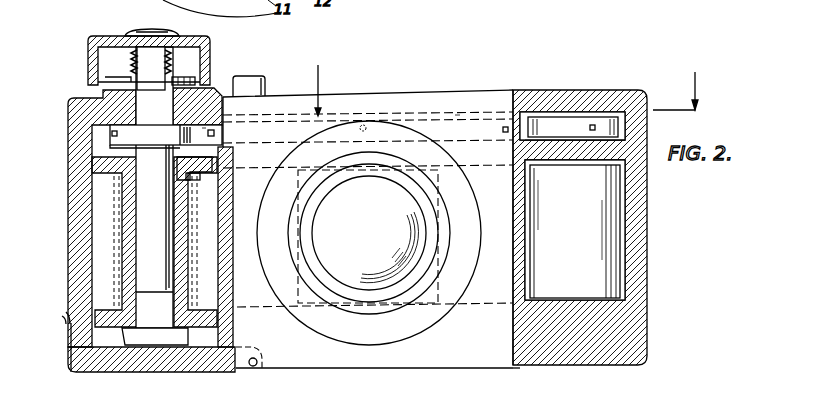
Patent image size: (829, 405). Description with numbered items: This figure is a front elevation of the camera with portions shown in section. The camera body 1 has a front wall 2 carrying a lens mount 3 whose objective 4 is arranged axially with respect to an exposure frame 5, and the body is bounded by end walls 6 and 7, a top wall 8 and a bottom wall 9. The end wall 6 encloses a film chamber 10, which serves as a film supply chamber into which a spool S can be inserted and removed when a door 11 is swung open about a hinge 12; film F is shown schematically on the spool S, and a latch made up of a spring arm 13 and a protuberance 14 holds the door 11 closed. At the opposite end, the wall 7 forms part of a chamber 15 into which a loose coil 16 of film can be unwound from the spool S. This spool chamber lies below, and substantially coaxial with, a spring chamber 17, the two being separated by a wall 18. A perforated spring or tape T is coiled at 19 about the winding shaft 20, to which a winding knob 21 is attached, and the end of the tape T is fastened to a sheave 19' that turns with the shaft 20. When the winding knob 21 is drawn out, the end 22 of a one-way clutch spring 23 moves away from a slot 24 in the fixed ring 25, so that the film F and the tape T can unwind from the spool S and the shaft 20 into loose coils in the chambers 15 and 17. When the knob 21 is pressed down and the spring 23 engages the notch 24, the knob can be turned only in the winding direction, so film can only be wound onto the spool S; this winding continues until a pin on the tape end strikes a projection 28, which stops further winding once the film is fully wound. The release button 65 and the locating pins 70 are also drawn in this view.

The camera body 1 is at (476, 368).
The front wall 2 is at (358, 360).
The lens mount 3 is at (474, 185).
The objective 4 is at (369, 233).
The exposure frame 5 is at (298, 200).
The end wall 6 is at (76, 222).
The end wall 7 is at (647, 225).
The top wall 8 is at (518, 96).
The bottom wall 9 is at (516, 362).
The film chamber 10 is at (100, 268).
The door 11 is at (165, 374).
The hinge 12 is at (254, 366).
The spring arm 13 is at (70, 344).
The protuberance 14 is at (66, 320).
The chamber 15 is at (627, 290).
The loose coil 16 is at (608, 253).
The spring chamber 17 is at (607, 110).
The wall 18 is at (607, 147).
The coil of spring tape 19 is at (573, 94).
The sheave 19' is at (134, 247).
The winding shaft 20 is at (155, 196).
The winding knob 21 is at (97, 38).
The end of clutch spring 22 is at (118, 80).
The one-way clutch spring 23 is at (136, 52).
The slot 24 is at (100, 82).
The fixed ring 25 is at (85, 100).
The projection 28 is at (110, 140).
The release button 65 is at (266, 84).
The locating pin 70 is at (364, 120).
The film F is at (117, 226).
The spool S is at (182, 260).
The spring tape T is at (202, 128).